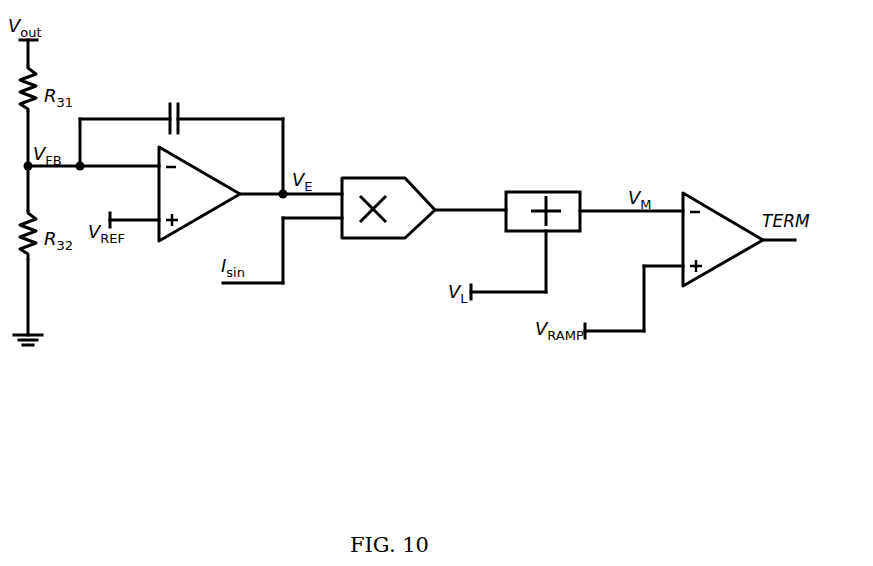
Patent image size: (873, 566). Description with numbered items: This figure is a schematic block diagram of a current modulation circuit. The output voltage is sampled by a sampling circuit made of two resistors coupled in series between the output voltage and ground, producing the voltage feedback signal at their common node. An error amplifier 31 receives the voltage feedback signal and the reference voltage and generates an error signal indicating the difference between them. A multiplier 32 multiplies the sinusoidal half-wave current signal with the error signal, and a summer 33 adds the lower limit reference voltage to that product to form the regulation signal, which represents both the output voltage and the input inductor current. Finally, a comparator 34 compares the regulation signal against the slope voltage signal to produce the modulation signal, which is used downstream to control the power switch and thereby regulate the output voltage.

The error amplifier 31 is at (199, 194).
The multiplier 32 is at (388, 208).
The summer 33 is at (518, 198).
The comparator 34 is at (723, 239).